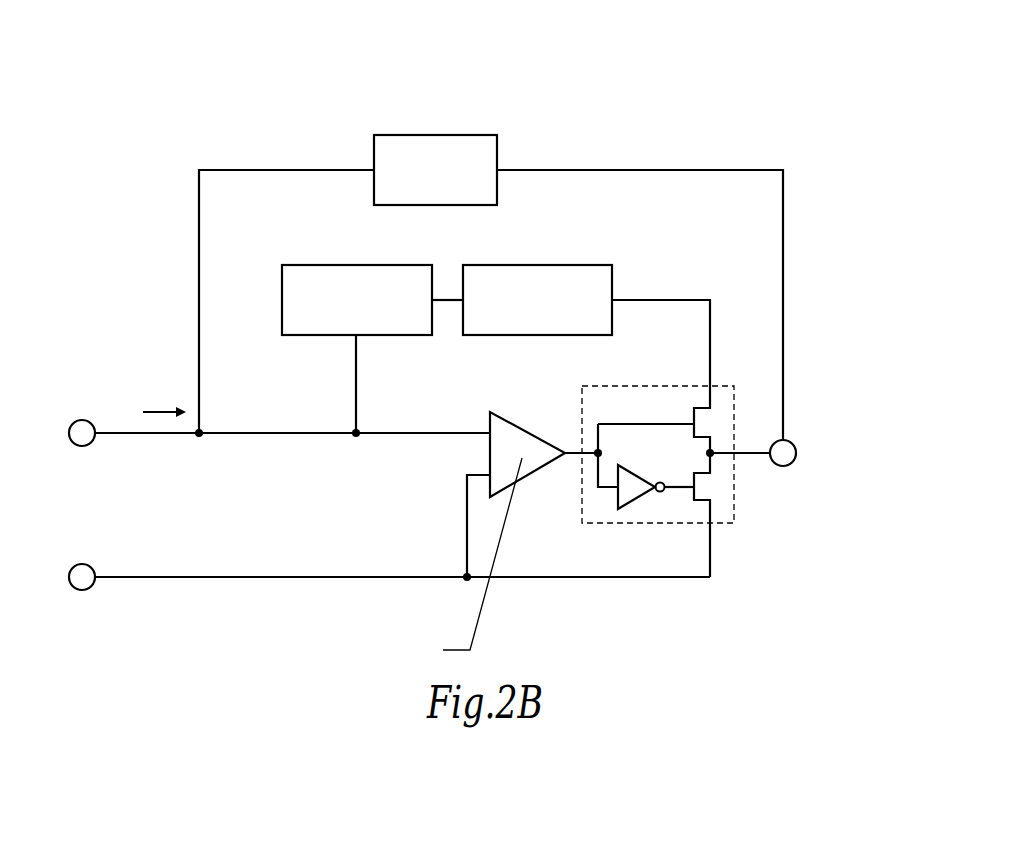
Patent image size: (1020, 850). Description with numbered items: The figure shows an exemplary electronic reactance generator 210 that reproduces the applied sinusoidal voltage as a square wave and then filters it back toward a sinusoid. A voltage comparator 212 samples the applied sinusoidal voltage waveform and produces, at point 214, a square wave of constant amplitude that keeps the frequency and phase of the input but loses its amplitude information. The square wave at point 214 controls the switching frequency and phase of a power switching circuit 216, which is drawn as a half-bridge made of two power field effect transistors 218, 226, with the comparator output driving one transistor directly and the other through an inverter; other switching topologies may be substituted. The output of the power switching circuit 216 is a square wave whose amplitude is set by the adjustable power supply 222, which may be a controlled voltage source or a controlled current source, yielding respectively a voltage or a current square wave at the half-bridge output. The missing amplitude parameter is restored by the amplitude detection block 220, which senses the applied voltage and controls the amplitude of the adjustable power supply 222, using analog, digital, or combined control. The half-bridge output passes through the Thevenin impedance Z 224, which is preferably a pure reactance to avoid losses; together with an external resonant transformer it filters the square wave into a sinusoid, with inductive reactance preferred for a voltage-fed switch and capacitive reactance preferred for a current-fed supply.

The electronic reactance generator 210 is at (797, 74).
The voltage comparator 212 is at (530, 434).
The point 214 is at (573, 455).
The power switching circuit 216 is at (735, 398).
The power field effect transistor 218 is at (711, 455).
The power field effect transistor 226 is at (711, 455).
The amplitude detection block 220 is at (356, 265).
The adjustable power supply 222 is at (537, 265).
The Thevenin impedance Z 224 is at (435, 135).